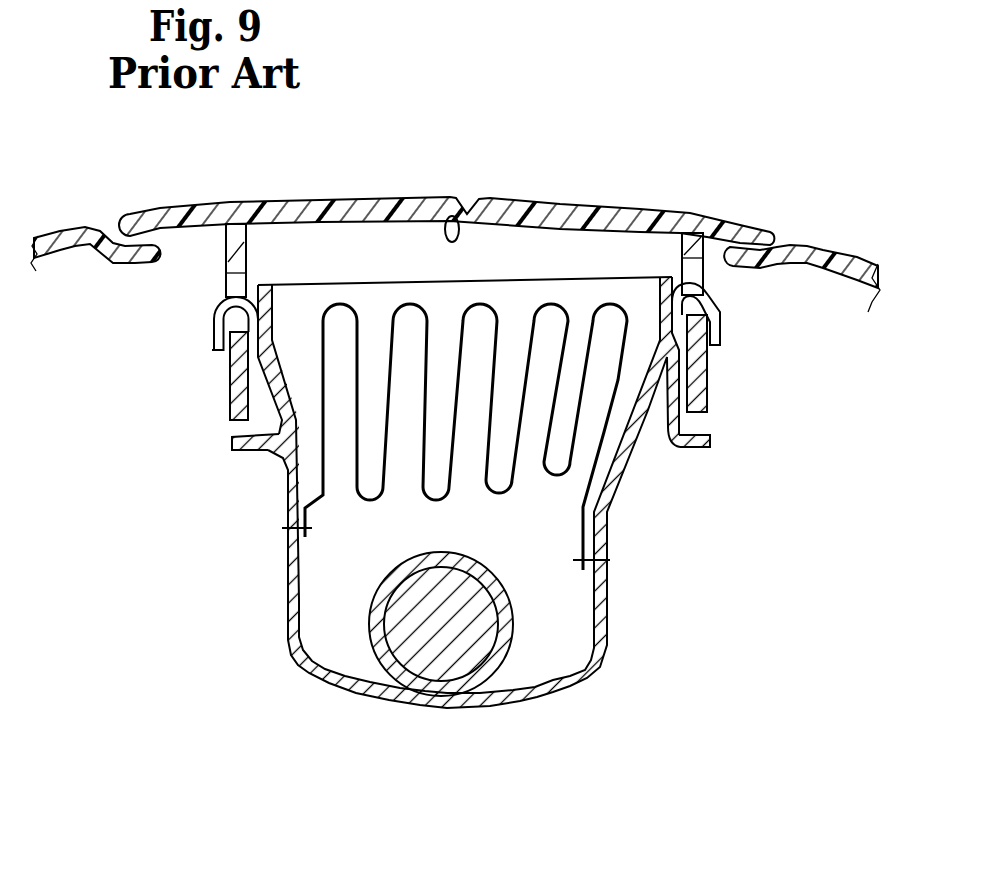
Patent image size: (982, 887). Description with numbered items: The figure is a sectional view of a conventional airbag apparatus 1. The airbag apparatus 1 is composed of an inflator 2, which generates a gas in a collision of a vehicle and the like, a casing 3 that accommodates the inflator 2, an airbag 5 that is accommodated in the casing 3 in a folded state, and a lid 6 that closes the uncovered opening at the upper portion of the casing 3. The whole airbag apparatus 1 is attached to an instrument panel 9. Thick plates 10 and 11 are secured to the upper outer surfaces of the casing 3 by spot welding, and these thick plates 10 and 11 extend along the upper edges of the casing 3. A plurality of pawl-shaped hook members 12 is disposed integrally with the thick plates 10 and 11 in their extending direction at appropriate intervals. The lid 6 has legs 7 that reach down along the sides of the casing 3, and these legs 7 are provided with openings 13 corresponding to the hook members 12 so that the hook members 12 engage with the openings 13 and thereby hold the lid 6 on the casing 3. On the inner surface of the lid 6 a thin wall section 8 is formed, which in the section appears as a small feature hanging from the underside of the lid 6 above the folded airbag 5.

The airbag apparatus 1 is at (620, 603).
The inflator 2 is at (486, 662).
The casing 3 is at (277, 560).
The airbag 5 is at (497, 500).
The lid 6 is at (608, 205).
The legs 7 is at (230, 409).
The thin wall section 8 is at (449, 216).
The instrument panel 9 is at (830, 256).
The thick plate 10 is at (676, 456).
The thick plate 11 is at (238, 458).
The hook members 12 is at (214, 349).
The openings 13 is at (226, 290).